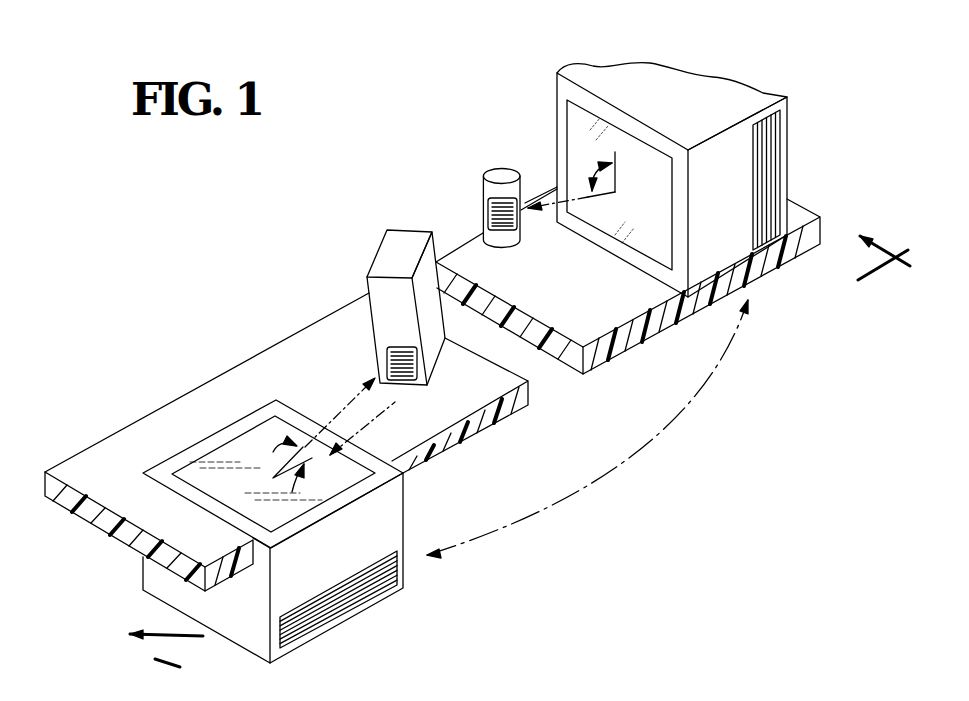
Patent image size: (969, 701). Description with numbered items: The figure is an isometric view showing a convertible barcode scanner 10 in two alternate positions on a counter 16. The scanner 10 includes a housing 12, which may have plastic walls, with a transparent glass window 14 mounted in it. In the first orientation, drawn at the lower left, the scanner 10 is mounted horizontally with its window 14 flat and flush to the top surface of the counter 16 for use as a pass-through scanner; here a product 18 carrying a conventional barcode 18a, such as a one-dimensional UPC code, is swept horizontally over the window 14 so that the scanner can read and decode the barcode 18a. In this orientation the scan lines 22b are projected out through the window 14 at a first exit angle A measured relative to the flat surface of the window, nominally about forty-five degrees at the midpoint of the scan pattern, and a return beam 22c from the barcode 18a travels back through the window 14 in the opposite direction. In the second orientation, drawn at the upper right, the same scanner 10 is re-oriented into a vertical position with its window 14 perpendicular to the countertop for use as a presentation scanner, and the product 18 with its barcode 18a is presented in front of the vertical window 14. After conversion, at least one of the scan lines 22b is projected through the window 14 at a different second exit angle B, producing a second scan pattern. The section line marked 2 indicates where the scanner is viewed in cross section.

The convertible barcode scanner 10 is at (484, 348).
The housing 12 is at (682, 112).
The window 14 is at (220, 487).
The counter 16 is at (162, 430).
The product 18 is at (413, 273).
The barcode 18a is at (490, 212).
The scan lines 22b is at (352, 401).
The return beam 22c is at (380, 403).
The section line 2 is at (509, 442).
The first exit angle A is at (272, 448).
The second exit angle B is at (612, 167).